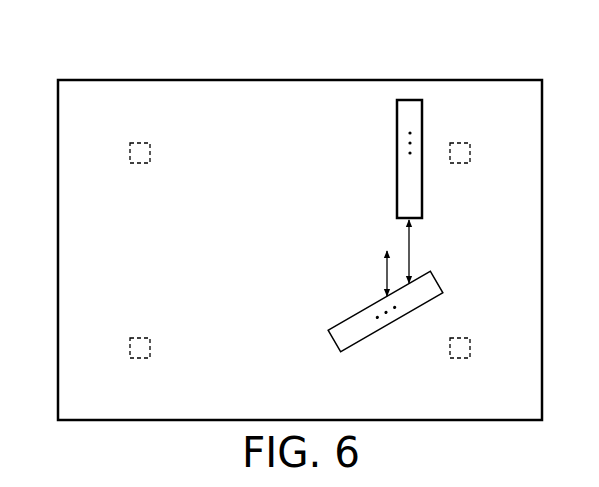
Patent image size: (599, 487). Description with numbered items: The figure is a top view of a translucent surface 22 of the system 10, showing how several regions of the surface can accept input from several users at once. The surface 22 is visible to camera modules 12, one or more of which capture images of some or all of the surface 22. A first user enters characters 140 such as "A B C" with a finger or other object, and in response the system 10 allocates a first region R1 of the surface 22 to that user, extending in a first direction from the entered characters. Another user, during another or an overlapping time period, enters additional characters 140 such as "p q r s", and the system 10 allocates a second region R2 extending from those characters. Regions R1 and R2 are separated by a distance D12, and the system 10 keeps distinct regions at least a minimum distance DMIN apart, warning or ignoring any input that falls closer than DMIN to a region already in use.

The system 10 is at (96, 46).
The camera modules 12 is at (142, 153).
The translucent surface 22 is at (522, 237).
The characters 140 is at (396, 177).
The first region R1 is at (361, 313).
The second region R2 is at (397, 120).
The distance between regions D12 is at (412, 253).
The minimum distance DMIN is at (383, 273).